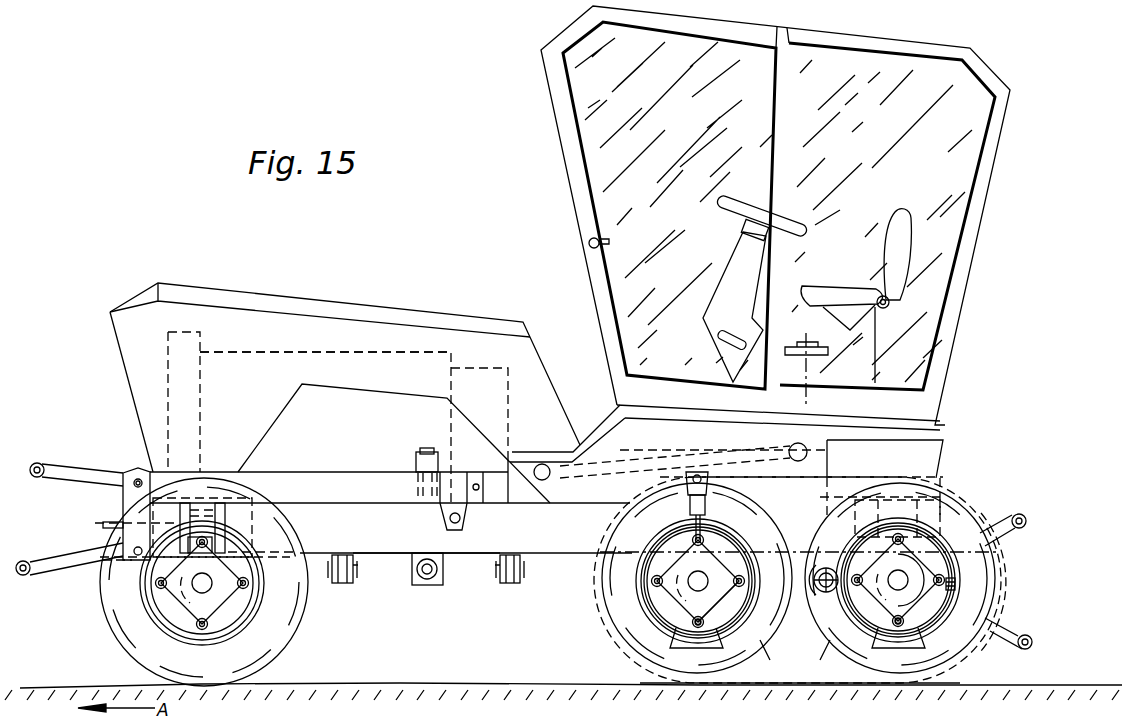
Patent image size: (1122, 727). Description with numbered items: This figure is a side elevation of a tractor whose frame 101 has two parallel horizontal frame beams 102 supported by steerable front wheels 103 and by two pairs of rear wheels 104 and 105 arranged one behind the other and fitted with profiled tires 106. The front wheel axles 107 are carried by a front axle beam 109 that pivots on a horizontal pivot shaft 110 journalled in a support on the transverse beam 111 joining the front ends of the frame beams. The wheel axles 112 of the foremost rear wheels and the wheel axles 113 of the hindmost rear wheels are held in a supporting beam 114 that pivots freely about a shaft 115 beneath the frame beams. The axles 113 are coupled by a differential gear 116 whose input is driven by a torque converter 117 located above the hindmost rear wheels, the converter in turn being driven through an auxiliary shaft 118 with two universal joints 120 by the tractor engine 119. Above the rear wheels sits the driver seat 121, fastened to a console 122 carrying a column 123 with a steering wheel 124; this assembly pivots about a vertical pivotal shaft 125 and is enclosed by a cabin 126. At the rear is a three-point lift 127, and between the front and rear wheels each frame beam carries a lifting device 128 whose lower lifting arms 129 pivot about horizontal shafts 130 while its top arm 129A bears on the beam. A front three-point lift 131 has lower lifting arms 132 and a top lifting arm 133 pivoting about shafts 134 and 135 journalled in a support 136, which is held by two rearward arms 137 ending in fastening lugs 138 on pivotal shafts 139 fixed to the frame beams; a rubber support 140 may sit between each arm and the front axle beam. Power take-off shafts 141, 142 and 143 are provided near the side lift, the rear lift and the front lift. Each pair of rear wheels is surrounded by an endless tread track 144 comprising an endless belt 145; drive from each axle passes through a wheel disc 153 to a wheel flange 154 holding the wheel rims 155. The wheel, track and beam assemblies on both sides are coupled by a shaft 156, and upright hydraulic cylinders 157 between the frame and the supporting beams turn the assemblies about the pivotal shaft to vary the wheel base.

The frame 101 is at (565, 567).
The frame beams 102 is at (582, 548).
The front wheels 103 is at (127, 650).
The foremost rear wheels 104 is at (610, 648).
The hindmost rear wheels 105 is at (960, 652).
The tires 106 is at (832, 642).
The axles 107 is at (200, 590).
The front axle beam 109 is at (243, 546).
The pivot shaft 110 is at (182, 528).
The transverse beam 111 is at (240, 522).
The wheel axles 112 is at (655, 606).
The wheel axles 113 is at (892, 640).
The supporting beam 114 is at (760, 612).
The shaft 115 is at (812, 584).
The differential gear 116 is at (948, 556).
The torque converter 117 is at (940, 453).
The auxiliary shaft 118 is at (632, 462).
The tractor engine 119 is at (283, 352).
The universal joints 120 is at (548, 465).
The driver seat 121 is at (858, 292).
The console 122 is at (718, 345).
The column 123 is at (730, 268).
The steering wheel 124 is at (808, 234).
The pivotal shaft 125 is at (806, 363).
The cabin 126 is at (562, 146).
The three-point lift 127 is at (1040, 598).
The lifting device 128 is at (392, 606).
The lower lifting arms 129 is at (340, 583).
The top arm 129A is at (426, 452).
The horizontal shafts 130 is at (354, 567).
The front three-point lift 131 is at (36, 508).
The lower lifting arms 132 is at (69, 573).
The top lifting arm 133 is at (97, 471).
The shaft 134 is at (130, 570).
The shaft 135 is at (138, 480).
The support 136 is at (123, 488).
The arms 137 is at (300, 478).
The fastening lugs 138 is at (440, 516).
The pivotal shafts 139 is at (456, 524).
The rubber support 140 is at (205, 495).
The power take-off shaft 141 is at (428, 585).
The power take-off shaft 142 is at (988, 612).
The power take-off shaft 143 is at (105, 524).
The endless tread track 144 is at (830, 688).
The endless belt 145 is at (990, 570).
The wheel disc 153 is at (668, 640).
The wheel flange 154 is at (640, 560).
The wheel rims 155 is at (605, 598).
The shaft 156 is at (834, 594).
The hydraulic cylinders 157 is at (668, 521).